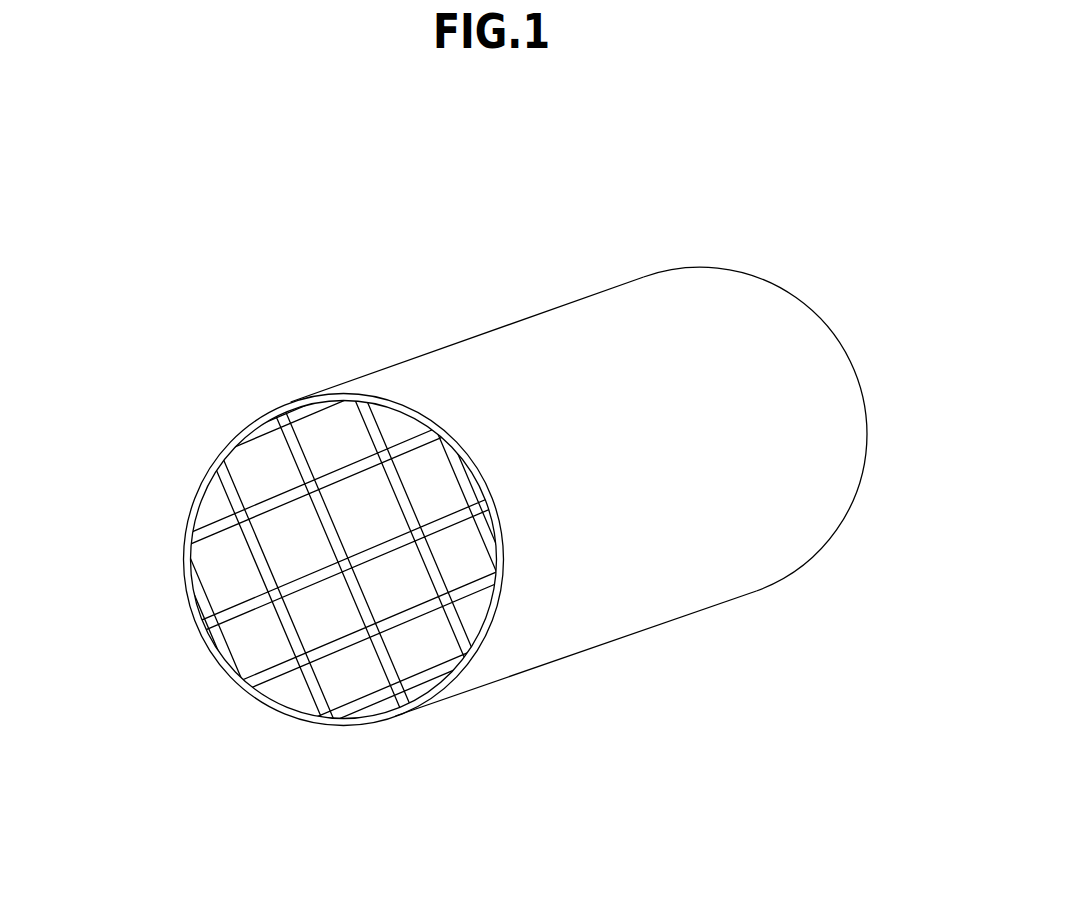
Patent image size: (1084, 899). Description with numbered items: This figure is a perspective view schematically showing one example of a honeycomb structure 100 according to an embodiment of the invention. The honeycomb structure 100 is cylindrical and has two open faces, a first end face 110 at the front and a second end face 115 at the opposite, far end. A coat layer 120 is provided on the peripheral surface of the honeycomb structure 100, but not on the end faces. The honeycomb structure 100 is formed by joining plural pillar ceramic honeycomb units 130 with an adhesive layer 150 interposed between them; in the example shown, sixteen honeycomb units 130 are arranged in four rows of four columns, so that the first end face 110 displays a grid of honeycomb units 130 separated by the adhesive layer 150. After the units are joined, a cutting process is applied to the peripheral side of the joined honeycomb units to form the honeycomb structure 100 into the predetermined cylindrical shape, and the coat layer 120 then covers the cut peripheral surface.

The honeycomb structure 100 is at (190, 233).
The first end face 110 is at (129, 531).
The second end face 115 is at (849, 307).
The coat layer 120 is at (447, 378).
The honeycomb unit 130 is at (218, 500).
The adhesive layer 150 is at (460, 628).